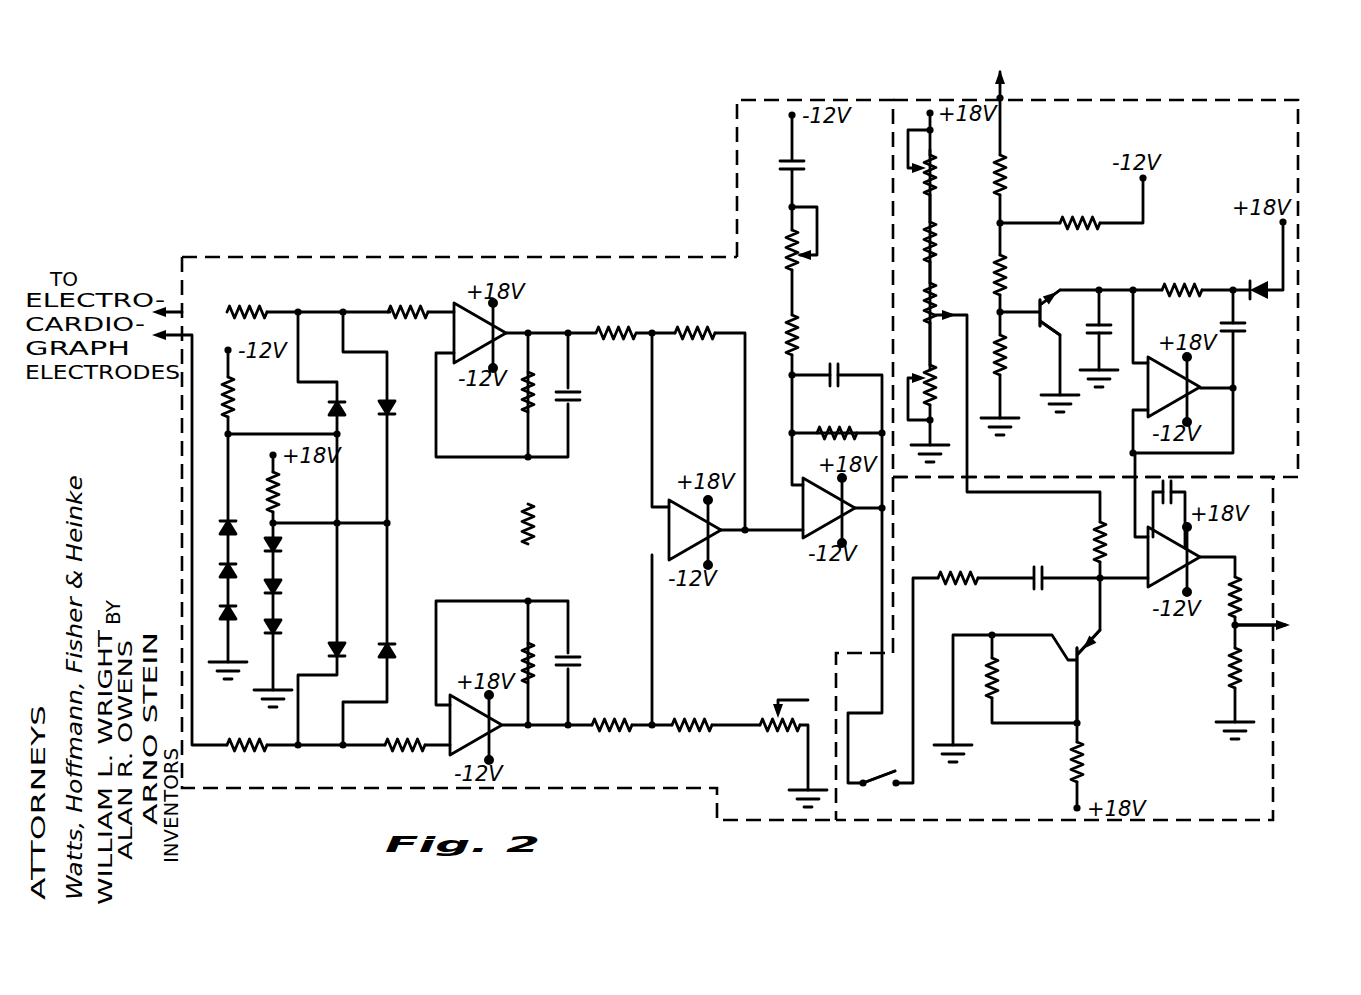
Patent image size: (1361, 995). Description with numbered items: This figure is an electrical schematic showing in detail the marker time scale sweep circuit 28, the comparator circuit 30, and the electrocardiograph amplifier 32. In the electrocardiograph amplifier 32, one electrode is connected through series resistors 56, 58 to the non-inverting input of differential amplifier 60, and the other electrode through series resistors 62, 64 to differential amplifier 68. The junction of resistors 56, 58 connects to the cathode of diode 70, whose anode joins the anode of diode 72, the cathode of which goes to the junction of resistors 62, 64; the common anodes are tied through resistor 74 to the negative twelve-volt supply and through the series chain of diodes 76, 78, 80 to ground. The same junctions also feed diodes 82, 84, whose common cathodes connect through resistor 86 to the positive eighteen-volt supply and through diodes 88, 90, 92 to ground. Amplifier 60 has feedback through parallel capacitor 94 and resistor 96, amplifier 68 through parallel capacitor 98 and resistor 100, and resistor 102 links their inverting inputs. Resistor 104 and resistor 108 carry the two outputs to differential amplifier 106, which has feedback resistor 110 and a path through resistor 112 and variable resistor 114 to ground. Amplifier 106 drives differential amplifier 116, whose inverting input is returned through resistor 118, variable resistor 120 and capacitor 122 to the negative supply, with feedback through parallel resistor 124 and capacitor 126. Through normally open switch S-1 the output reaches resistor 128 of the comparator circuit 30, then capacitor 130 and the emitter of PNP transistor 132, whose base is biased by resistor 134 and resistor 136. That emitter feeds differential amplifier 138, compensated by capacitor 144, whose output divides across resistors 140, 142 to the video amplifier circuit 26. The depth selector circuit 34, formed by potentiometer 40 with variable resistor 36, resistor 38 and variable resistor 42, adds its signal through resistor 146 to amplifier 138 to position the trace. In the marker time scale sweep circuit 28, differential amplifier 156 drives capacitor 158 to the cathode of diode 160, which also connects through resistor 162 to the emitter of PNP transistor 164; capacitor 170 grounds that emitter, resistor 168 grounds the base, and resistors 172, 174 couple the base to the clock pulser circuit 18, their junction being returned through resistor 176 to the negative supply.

The clock pulser circuit 18 is at (1095, 264).
The video amplifier circuit 26 is at (1289, 669).
The marker time scale sweep circuit 28 is at (905, 95).
The comparator circuit 30 is at (1110, 825).
The electrocardiograph amplifier 32 is at (540, 255).
The depth selector circuit 34 is at (916, 240).
The variable resistor 36 is at (938, 166).
The resistor 38 is at (938, 238).
The potentiometer 40 is at (936, 304).
The variable resistor 42 is at (924, 370).
The resistor 56 is at (248, 310).
The resistor 58 is at (404, 310).
The differential amplifier 60 is at (508, 328).
The resistor 62 is at (243, 752).
The resistor 64 is at (408, 752).
The differential amplifier 68 is at (505, 730).
The diode 70 is at (345, 409).
The diode 72 is at (346, 654).
The resistor 74 is at (235, 402).
The diode 76 is at (238, 528).
The diode 78 is at (236, 570).
The diode 80 is at (236, 611).
The diode 82 is at (395, 409).
The diode 84 is at (394, 654).
The resistor 86 is at (282, 484).
The diode 88 is at (282, 548).
The diode 90 is at (282, 590).
The diode 92 is at (282, 630).
The capacitor 94 is at (580, 392).
The resistor 96 is at (536, 385).
The capacitor 98 is at (580, 658).
The resistor 100 is at (498, 660).
The resistor 102 is at (536, 525).
The resistor 104 is at (612, 322).
The differential amplifier 106 is at (716, 538).
The resistor 108 is at (632, 706).
The feedback resistor 110 is at (696, 320).
The resistor 112 is at (716, 706).
The variable resistor 114 is at (760, 738).
The differential amplifier 116 is at (810, 540).
The resistor 118 is at (798, 330).
The variable resistor 120 is at (785, 255).
The capacitor 122 is at (798, 168).
The resistor 124 is at (842, 413).
The capacitor 126 is at (852, 352).
The resistor 128 is at (960, 561).
The capacitor 130 is at (1050, 561).
The PNP transistor 132 is at (1086, 658).
The resistor 134 is at (1086, 766).
The resistor 136 is at (1000, 680).
The differential amplifier 138 is at (1200, 553).
The resistor 140 is at (1246, 578).
The resistor 142 is at (1224, 668).
The capacitor 144 is at (1176, 492).
The resistor 146 is at (1094, 522).
The differential amplifier 156 is at (1200, 384).
The capacitor 158 is at (1244, 324).
The diode 160 is at (1270, 274).
The resistor 162 is at (1174, 284).
The PNP transistor 164 is at (1053, 329).
The resistor 168 is at (1006, 372).
The capacitor 170 is at (1110, 322).
The resistor 172 is at (1008, 276).
The resistor 174 is at (1008, 166).
The resistor 176 is at (1082, 216).
The normally open switch S-1 is at (878, 790).